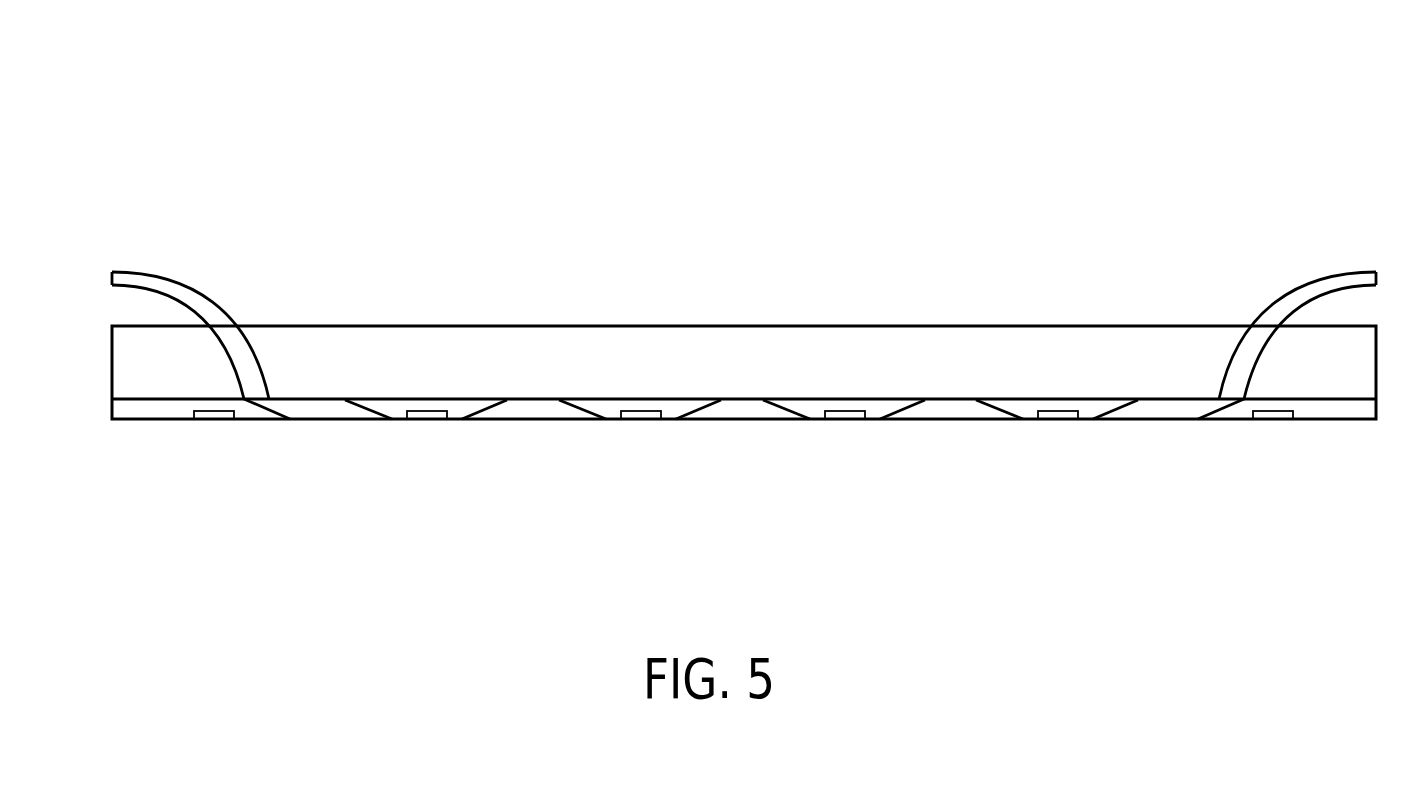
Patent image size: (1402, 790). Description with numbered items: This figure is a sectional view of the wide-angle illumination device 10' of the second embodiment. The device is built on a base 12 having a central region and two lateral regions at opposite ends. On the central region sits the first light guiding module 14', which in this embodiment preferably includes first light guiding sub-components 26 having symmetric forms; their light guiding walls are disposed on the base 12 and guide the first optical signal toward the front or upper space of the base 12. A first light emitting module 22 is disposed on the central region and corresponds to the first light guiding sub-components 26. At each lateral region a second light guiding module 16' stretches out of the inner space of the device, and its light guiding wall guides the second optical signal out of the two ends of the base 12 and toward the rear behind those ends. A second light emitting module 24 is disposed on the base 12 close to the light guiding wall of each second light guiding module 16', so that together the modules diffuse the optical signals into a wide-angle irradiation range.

The wide-angle illumination device 10' is at (735, 275).
The base 12 is at (111, 409).
The first light guiding module 14′ is at (1040, 258).
The second light guiding module 16' is at (744, 295).
The first light emitting module 22 is at (423, 419).
The second light emitting module 24 is at (212, 419).
The first light guiding sub-component 26 is at (373, 410).